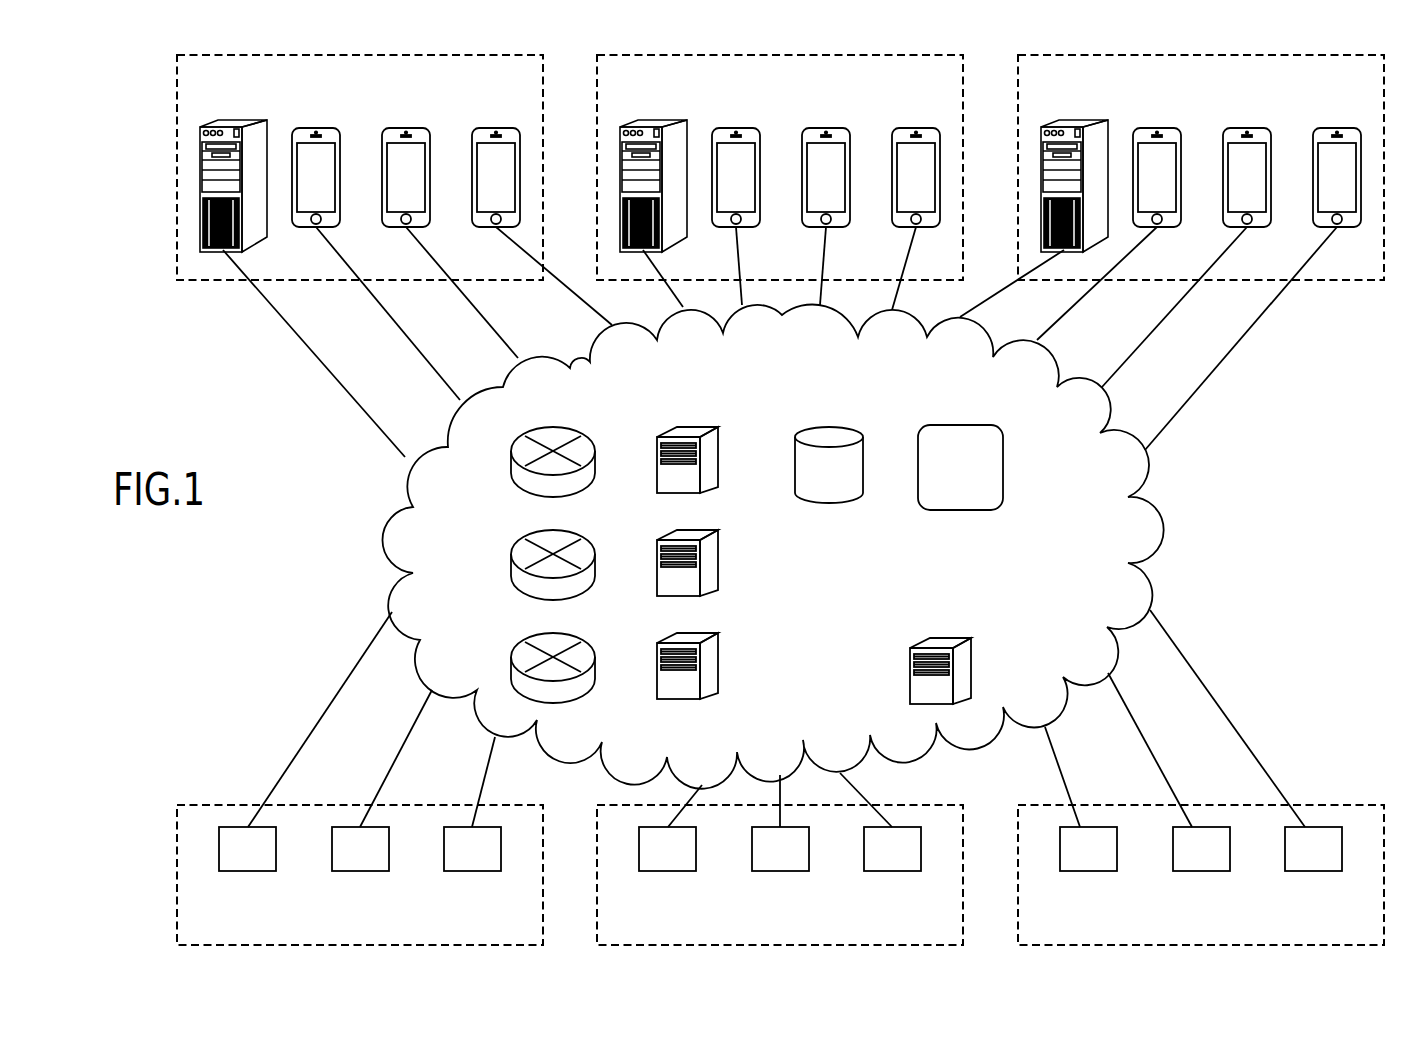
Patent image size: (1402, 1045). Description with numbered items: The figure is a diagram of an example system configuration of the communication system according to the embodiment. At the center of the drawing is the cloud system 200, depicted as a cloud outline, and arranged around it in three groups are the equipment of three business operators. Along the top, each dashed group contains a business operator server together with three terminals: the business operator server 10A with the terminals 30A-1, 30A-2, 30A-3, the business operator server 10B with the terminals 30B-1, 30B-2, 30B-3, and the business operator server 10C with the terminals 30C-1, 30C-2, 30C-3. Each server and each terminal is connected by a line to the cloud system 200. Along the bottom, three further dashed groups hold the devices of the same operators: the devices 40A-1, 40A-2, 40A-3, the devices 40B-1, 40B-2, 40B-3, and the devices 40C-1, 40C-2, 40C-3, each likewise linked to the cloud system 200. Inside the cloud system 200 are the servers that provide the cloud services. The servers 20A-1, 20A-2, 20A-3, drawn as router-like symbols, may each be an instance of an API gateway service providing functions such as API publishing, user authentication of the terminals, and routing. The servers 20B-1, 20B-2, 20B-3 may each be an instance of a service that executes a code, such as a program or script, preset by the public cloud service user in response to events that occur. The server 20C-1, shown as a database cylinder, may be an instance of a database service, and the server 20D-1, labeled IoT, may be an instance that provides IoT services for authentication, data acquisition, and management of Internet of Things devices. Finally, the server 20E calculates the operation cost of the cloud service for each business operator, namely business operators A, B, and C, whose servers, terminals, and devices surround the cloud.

The business operator server 10A is at (239, 123).
The business operator server 10B is at (659, 123).
The business operator server 10C is at (1080, 123).
The terminal 30A-1 is at (317, 127).
The terminal 30A-2 is at (407, 127).
The terminal 30A-3 is at (497, 127).
The terminal 30B-1 is at (737, 127).
The terminal 30B-2 is at (827, 127).
The terminal 30B-3 is at (917, 127).
The terminal 30C-1 is at (1158, 127).
The terminal 30C-2 is at (1248, 127).
The terminal 30C-3 is at (1338, 127).
The server 20A-1 is at (552, 428).
The server 20A-2 is at (552, 531).
The server 20A-3 is at (552, 634).
The server 20B-1 is at (697, 428).
The server 20B-2 is at (697, 531).
The server 20B-3 is at (697, 634).
The server 20C-1 is at (829, 427).
The server 20D-1 is at (961, 425).
The server 20E is at (953, 638).
The cloud system 200 is at (1164, 528).
The device 40A-1 is at (246, 872).
The device 40A-2 is at (359, 872).
The device 40A-3 is at (471, 872).
The device 40B-1 is at (666, 872).
The device 40B-2 is at (779, 872).
The device 40B-3 is at (891, 872).
The device 40C-1 is at (1087, 872).
The device 40C-2 is at (1200, 872).
The device 40C-3 is at (1312, 872).